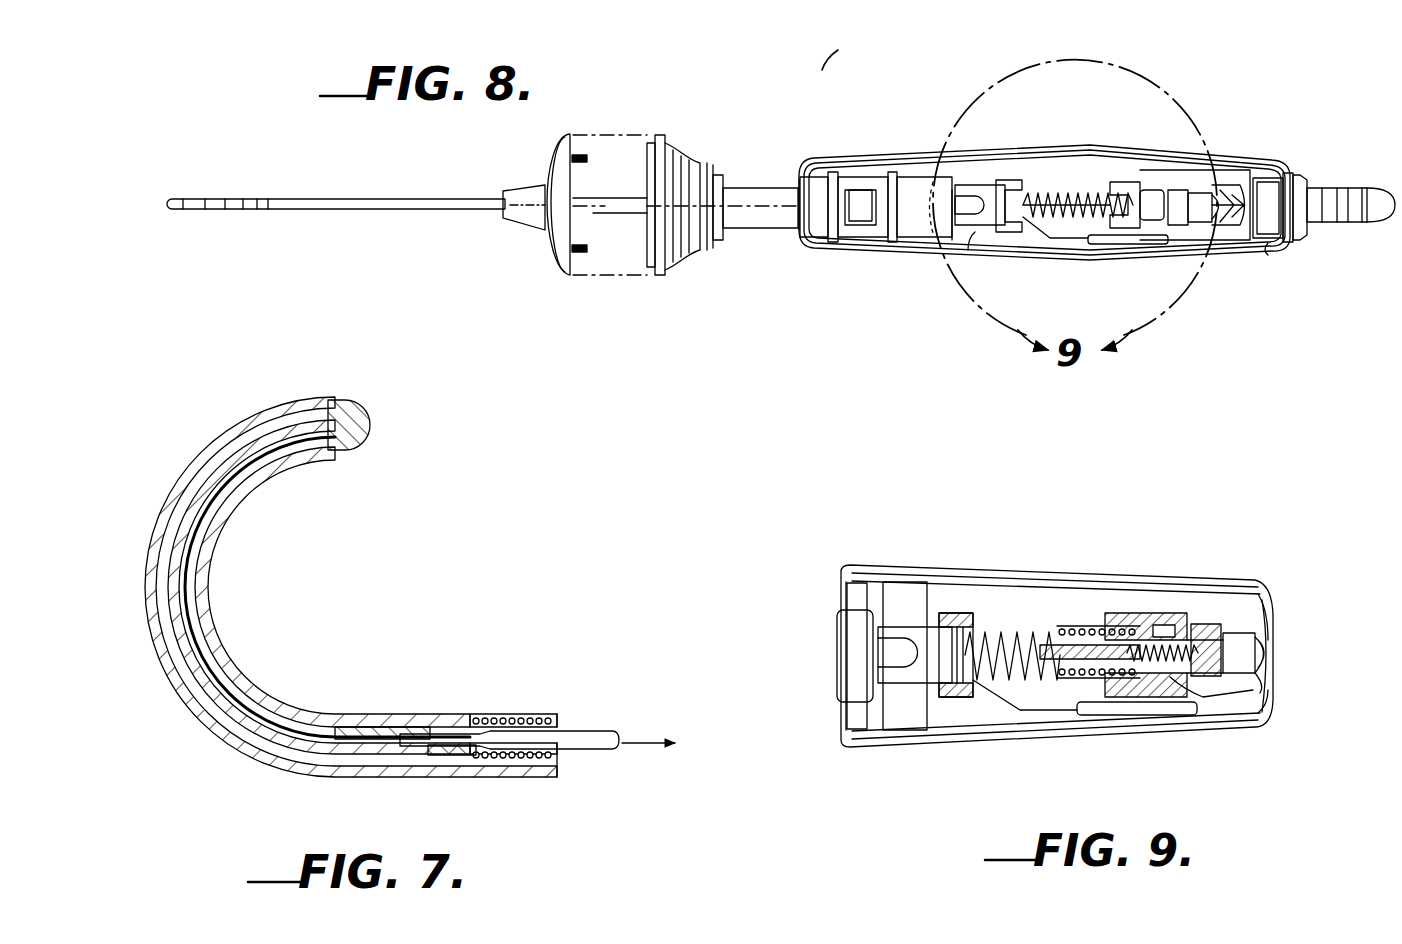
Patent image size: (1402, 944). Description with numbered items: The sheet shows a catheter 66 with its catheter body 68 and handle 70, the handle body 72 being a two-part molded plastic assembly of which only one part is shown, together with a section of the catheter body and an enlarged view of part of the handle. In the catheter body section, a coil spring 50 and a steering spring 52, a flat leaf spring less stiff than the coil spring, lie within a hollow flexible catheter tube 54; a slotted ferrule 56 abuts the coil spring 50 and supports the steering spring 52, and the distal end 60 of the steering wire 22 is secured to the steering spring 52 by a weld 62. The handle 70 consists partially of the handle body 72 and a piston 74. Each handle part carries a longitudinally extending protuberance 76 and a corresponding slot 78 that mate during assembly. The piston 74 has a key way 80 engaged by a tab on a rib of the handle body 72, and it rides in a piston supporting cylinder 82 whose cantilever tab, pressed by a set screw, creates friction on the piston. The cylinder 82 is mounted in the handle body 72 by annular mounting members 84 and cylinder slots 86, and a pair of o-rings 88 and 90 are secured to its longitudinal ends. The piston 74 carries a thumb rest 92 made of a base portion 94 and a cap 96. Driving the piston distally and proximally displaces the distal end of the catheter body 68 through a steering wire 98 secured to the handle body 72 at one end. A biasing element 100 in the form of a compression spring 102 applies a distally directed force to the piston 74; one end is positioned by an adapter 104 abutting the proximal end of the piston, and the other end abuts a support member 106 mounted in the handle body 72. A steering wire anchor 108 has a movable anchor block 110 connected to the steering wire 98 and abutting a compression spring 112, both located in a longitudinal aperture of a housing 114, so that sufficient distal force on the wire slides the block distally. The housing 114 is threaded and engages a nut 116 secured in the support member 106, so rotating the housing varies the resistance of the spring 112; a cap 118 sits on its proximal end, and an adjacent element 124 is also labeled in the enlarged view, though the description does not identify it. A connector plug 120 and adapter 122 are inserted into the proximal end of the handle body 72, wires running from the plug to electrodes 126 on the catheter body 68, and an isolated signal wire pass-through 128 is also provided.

In FIG. 7, the steering wire 22 is at (598, 733).
In FIG. 7, the coil spring 50 is at (560, 715).
In FIG. 7, the steering spring 52 is at (440, 775).
In FIG. 7, the catheter tube 54 is at (288, 472).
In FIG. 7, the ferrule 56 is at (415, 725).
In FIG. 7, the distal end of the steering wire 60 is at (230, 500).
In FIG. 7, the weld 62 is at (268, 436).
In FIG. 8, the catheter 66 is at (818, 70).
In FIG. 8, the catheter body 68 is at (336, 181).
In FIG. 8, the handle 70 is at (1068, 218).
In FIG. 8, the handle body 72 is at (820, 157).
In FIG. 8, the piston 74 is at (740, 232).
In FIG. 8, the protuberance 76 is at (1264, 256).
In FIG. 8, the slot 78 is at (1282, 176).
In FIG. 8, the key way 80 is at (967, 195).
In FIG. 9, the key way 80 is at (883, 652).
In FIG. 8, the piston supporting cylinder 82 is at (868, 240).
In FIG. 9, the piston supporting cylinder 82 is at (897, 640).
In FIG. 8, the mounting members 84 is at (872, 177).
In FIG. 8, the cylinder slots 86 is at (896, 190).
In FIG. 8, the o-ring 88 is at (972, 252).
In FIG. 9, the o-ring 88 is at (880, 688).
In FIG. 8, the o-ring 90 is at (799, 170).
In FIG. 8, the thumb rest 92 is at (651, 201).
In FIG. 8, the base portion 94 is at (650, 276).
In FIG. 8, the cap 96 is at (556, 265).
In FIG. 9, the steering wire 98 is at (1060, 630).
In FIG. 8, the biasing element 100 is at (1048, 185).
In FIG. 9, the biasing element 100 is at (1080, 625).
In FIG. 8, the compression spring 102 is at (1096, 212).
In FIG. 9, the compression spring 102 is at (1072, 676).
In FIG. 9, the adapter 104 is at (958, 690).
In FIG. 8, the support member 106 is at (1150, 185).
In FIG. 9, the support member 106 is at (1118, 613).
In FIG. 9, the steering wire anchor 108 is at (1197, 625).
In FIG. 9, the anchor block 110 is at (1252, 655).
In FIG. 9, the compression spring 112 is at (1190, 680).
In FIG. 8, the housing 114 is at (1200, 190).
In FIG. 9, the housing 114 is at (1240, 640).
In FIG. 8, the nut 116 is at (1148, 190).
In FIG. 9, the nut 116 is at (1165, 627).
In FIG. 8, the cap 118 is at (1228, 188).
In FIG. 9, the cap 118 is at (1262, 640).
In FIG. 8, the connector plug 120 is at (1343, 192).
In FIG. 8, the adapter 122 is at (1307, 240).
In FIG. 9, the end wall 124 is at (1270, 655).
In FIG. 8, the electrodes 126 is at (236, 198).
In FIG. 9, the signal wire pass-through 128 is at (1125, 716).